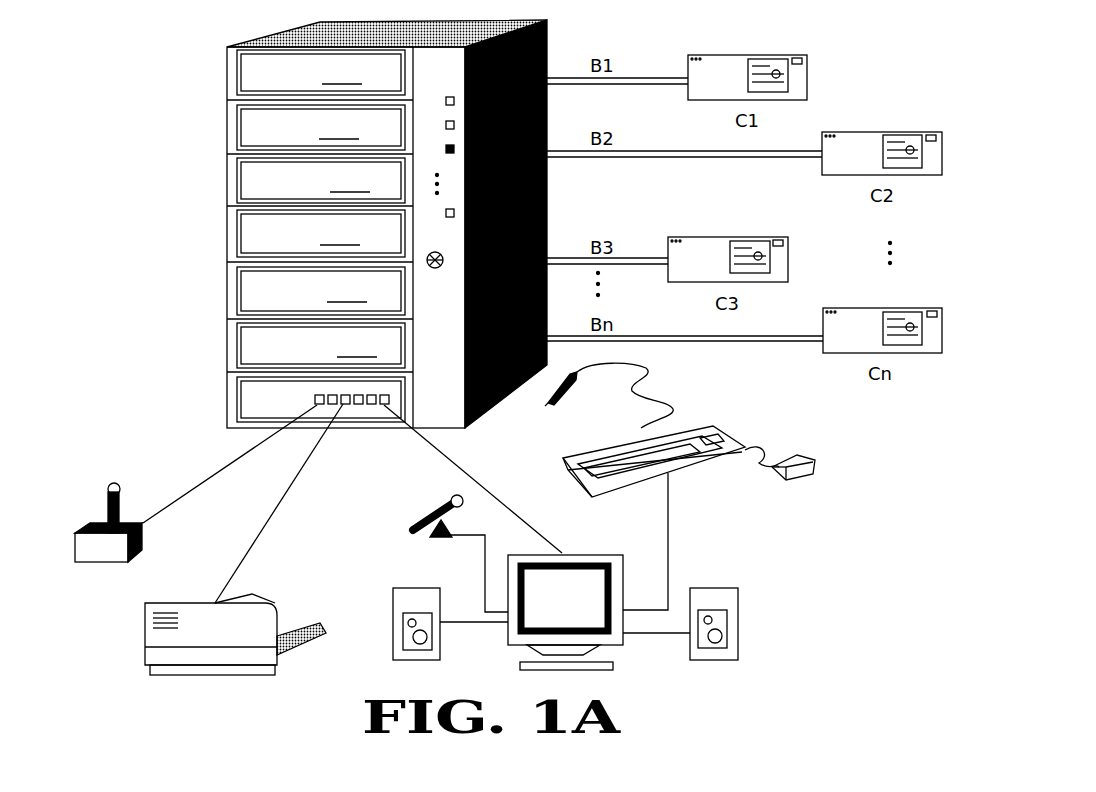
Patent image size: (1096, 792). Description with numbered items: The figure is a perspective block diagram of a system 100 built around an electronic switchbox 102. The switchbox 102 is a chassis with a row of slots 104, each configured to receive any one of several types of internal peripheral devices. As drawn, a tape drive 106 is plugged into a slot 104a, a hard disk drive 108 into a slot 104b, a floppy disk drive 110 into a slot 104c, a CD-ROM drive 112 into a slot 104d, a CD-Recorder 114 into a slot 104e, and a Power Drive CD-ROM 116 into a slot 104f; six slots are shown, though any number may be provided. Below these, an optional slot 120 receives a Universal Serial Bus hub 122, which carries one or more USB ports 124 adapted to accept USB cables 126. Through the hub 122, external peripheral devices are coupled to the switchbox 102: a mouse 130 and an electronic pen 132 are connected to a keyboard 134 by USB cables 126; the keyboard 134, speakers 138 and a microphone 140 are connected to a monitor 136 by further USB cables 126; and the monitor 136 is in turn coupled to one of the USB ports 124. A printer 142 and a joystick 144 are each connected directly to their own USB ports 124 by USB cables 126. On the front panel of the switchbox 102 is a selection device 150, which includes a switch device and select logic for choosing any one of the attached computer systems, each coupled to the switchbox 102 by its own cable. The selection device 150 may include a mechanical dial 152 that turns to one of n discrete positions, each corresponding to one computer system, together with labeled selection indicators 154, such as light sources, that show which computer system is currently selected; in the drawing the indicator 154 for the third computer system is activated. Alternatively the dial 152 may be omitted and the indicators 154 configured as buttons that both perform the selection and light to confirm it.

The system 100 is at (838, 493).
The electronic switchbox 102 is at (547, 45).
The slots 104 is at (150, 107).
The slot 104a is at (228, 70).
The slot 104b is at (228, 127).
The slot 104c is at (228, 184).
The slot 104d is at (228, 240).
The slot 104e is at (228, 294).
The slot 104f is at (228, 350).
The tape drive 106 is at (311, 73).
The hard disk drive 108 is at (319, 128).
The floppy disk drive 110 is at (314, 181).
The CD-ROM drive 112 is at (322, 234).
The CD-Recorder 114 is at (321, 291).
The Power Drive CD-ROM 116 is at (320, 346).
The optional slot 120 is at (238, 393).
The USB hub 122 is at (240, 412).
The USB ports 124 is at (332, 405).
The USB cables 126 is at (222, 472).
The mouse 130 is at (810, 452).
The electronic pen 132 is at (553, 398).
The keyboard 134 is at (585, 453).
The monitor 136 is at (585, 609).
The speakers 138 is at (397, 588).
The microphone 140 is at (436, 512).
The printer 142 is at (143, 640).
The joystick 144 is at (105, 518).
The selection device 150 is at (456, 351).
The mechanical dial 152 is at (443, 255).
The selection indicators 154 is at (547, 170).